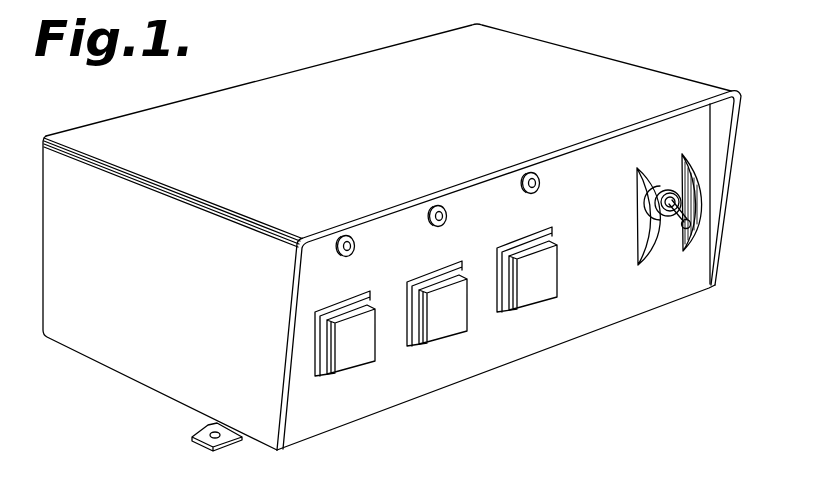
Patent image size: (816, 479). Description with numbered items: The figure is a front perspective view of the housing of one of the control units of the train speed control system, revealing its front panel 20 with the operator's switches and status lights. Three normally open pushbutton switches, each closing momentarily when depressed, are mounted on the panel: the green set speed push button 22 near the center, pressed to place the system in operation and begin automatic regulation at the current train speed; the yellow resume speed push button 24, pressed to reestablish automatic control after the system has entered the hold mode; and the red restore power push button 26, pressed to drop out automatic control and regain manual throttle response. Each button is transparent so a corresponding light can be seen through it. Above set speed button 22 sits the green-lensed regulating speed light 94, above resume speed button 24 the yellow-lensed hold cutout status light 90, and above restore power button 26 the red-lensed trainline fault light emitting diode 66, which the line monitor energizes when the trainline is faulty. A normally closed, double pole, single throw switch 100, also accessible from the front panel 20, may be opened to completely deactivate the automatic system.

The front panel 20 is at (592, 323).
The set speed push button 22 is at (561, 265).
The resume speed push button 24 is at (468, 322).
The restore power push button 26 is at (343, 356).
The trainline fault light emitting diode 66 is at (350, 234).
The hold cutout status light 90 is at (437, 204).
The regulating speed light 94 is at (540, 181).
The double pole, single throw switch 100 is at (690, 224).